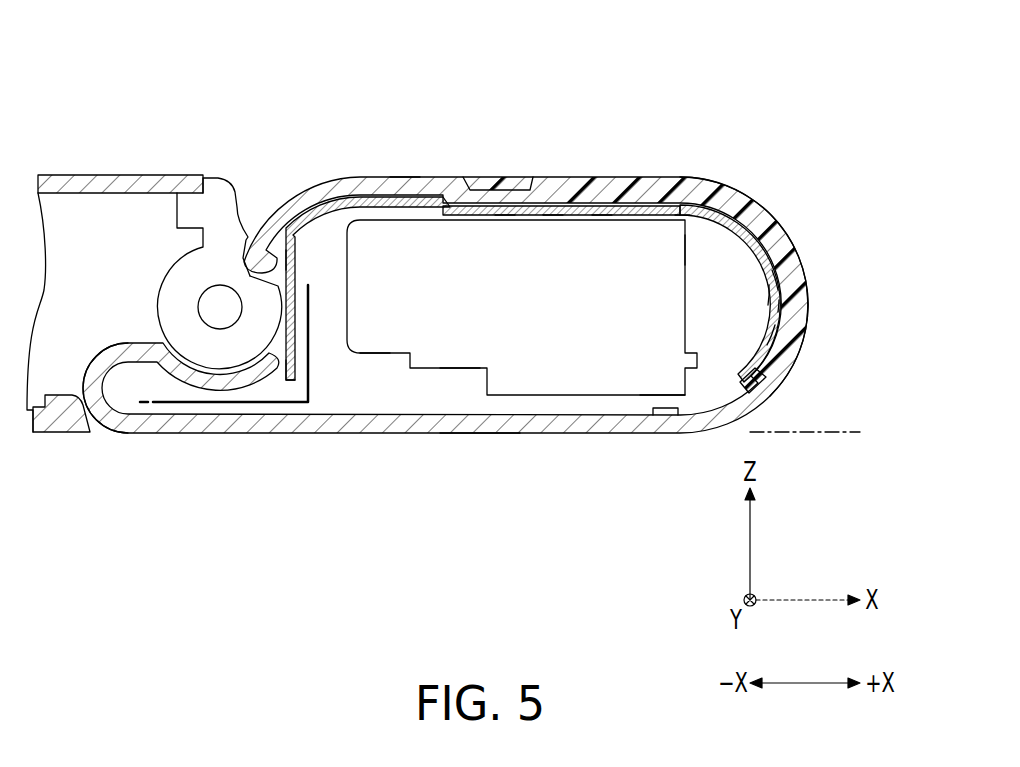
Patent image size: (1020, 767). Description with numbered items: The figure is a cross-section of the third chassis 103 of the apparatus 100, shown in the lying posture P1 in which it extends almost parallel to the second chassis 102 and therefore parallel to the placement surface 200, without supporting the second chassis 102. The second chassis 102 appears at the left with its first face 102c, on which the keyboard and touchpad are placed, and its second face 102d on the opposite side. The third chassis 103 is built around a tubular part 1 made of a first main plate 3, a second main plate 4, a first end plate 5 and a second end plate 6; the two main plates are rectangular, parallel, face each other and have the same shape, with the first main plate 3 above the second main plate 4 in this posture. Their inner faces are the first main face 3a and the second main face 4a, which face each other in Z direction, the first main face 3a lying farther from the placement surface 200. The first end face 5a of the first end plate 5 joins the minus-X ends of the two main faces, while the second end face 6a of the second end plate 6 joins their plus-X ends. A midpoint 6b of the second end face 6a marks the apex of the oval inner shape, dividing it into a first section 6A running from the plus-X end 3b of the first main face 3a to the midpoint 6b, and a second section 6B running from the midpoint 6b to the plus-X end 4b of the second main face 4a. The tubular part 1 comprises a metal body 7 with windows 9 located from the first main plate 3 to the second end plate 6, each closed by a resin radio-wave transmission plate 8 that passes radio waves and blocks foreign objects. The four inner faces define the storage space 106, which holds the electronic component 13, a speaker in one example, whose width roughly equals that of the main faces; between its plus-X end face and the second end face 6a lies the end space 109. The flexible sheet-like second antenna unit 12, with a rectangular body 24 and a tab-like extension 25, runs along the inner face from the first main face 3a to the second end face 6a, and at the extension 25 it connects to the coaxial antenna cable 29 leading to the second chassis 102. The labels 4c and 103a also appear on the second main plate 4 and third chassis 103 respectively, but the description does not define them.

The electronic device 100 is at (540, 96).
The second chassis 102 is at (100, 168).
The first face 102c is at (148, 173).
The second face 102d is at (62, 436).
The tubular part 1 is at (308, 190).
The body 7 is at (347, 186).
The first end plate 5 is at (260, 232).
The first end face 5a is at (343, 262).
The extension 25 is at (345, 293).
The lying posture P1 is at (404, 168).
The first main plate 3 is at (562, 192).
The first main face 3a is at (555, 212).
The +X direction end of the first main face 3b is at (688, 216).
The second antenna unit 12 is at (601, 214).
The body 24 is at (504, 216).
The second main plate 4 is at (530, 426).
The second main face 4a is at (467, 416).
The +X direction end of the second main face 4b is at (675, 394).
The bottom wall 4c is at (478, 436).
The second end plate 6 is at (800, 266).
The first section 6A is at (766, 295).
The second section 6B is at (757, 318).
The second end face 6a is at (778, 296).
The midpoint 6b is at (770, 305).
The radio-wave transmission plate 8 is at (784, 242).
The window 9 is at (758, 384).
The electronic component 13 is at (373, 342).
The antenna cable 29 is at (205, 436).
The third chassis 103 is at (774, 191).
The outer surface of outer wall 103a is at (810, 308).
The storage space 106 is at (330, 378).
The end space 109 is at (684, 252).
The placement surface 200 is at (850, 430).